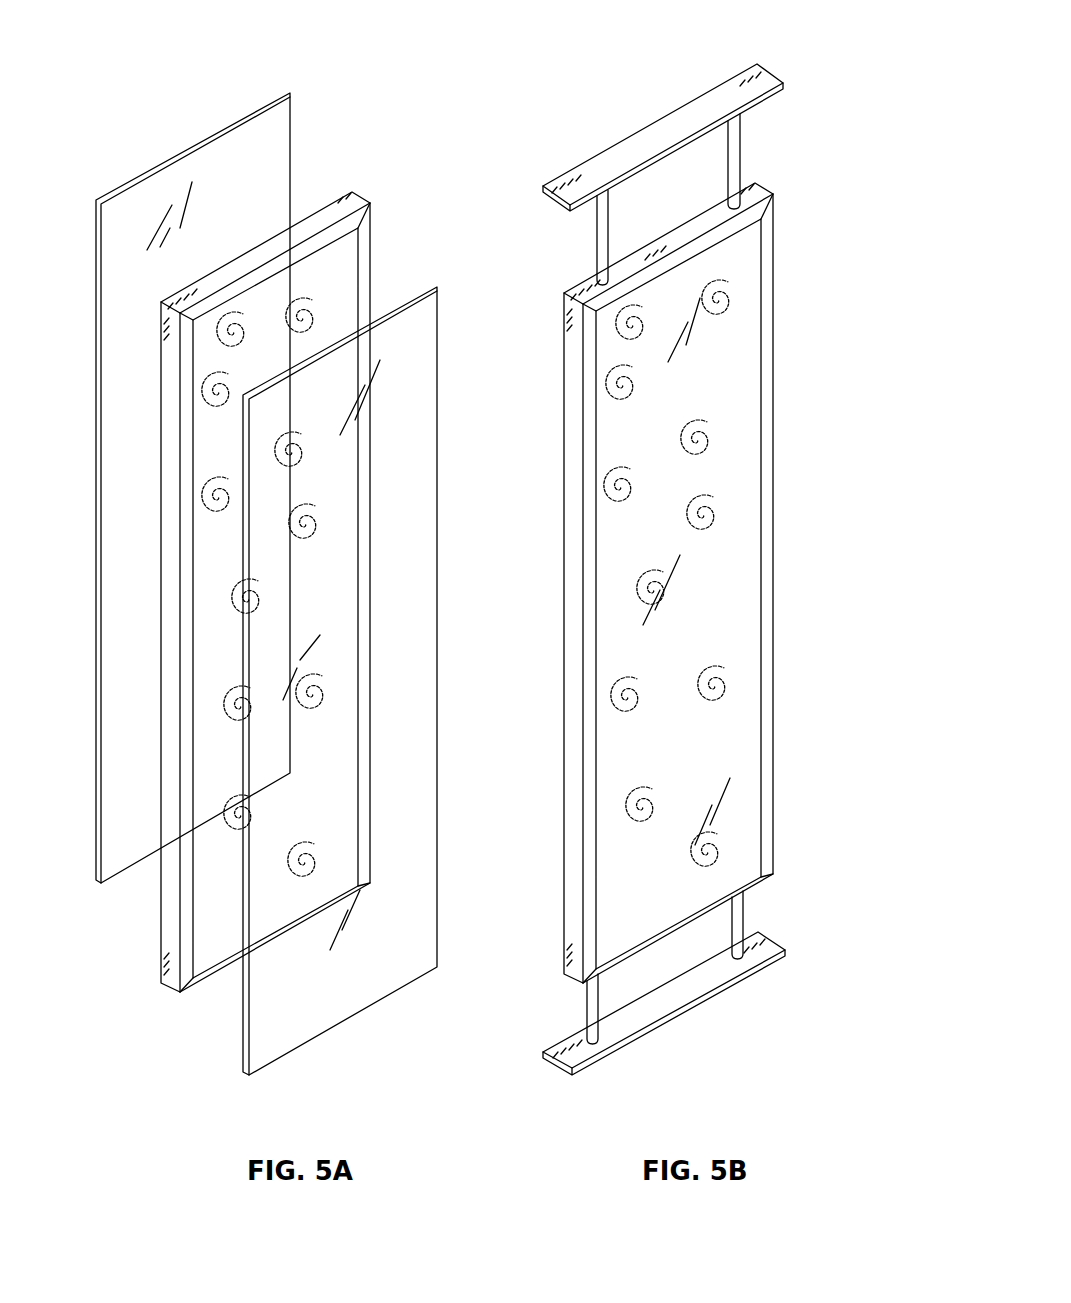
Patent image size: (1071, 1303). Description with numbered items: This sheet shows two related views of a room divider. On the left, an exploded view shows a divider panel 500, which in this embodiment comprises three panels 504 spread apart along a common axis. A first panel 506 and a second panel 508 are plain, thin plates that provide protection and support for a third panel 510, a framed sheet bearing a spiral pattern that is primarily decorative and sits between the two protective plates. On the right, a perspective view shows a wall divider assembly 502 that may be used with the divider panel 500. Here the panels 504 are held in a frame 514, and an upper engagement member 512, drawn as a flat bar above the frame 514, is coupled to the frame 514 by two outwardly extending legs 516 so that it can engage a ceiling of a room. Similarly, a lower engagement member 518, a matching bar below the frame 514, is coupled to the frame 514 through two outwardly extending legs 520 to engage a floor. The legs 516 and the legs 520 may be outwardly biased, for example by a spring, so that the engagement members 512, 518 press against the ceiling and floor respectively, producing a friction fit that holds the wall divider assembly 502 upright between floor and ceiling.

In FIG. 5A, the divider panel 500 is at (138, 68).
In FIG. 5B, the wall divider assembly 502 is at (540, 99).
In FIG. 5A, the panels 504 is at (73, 510).
In FIG. 5B, the panels 504 is at (788, 543).
In FIG. 5A, the first panel 506 is at (438, 421).
In FIG. 5A, the second panel 508 is at (118, 205).
In FIG. 5A, the third panel 510 is at (367, 249).
In FIG. 5B, the upper engagement member 512 is at (773, 72).
In FIG. 5B, the frame 514 is at (775, 387).
In FIG. 5B, the outwardly extending legs 516 is at (743, 153).
In FIG. 5B, the lower engagement member 518 is at (762, 968).
In FIG. 5B, the outwardly extending legs 520 is at (745, 920).